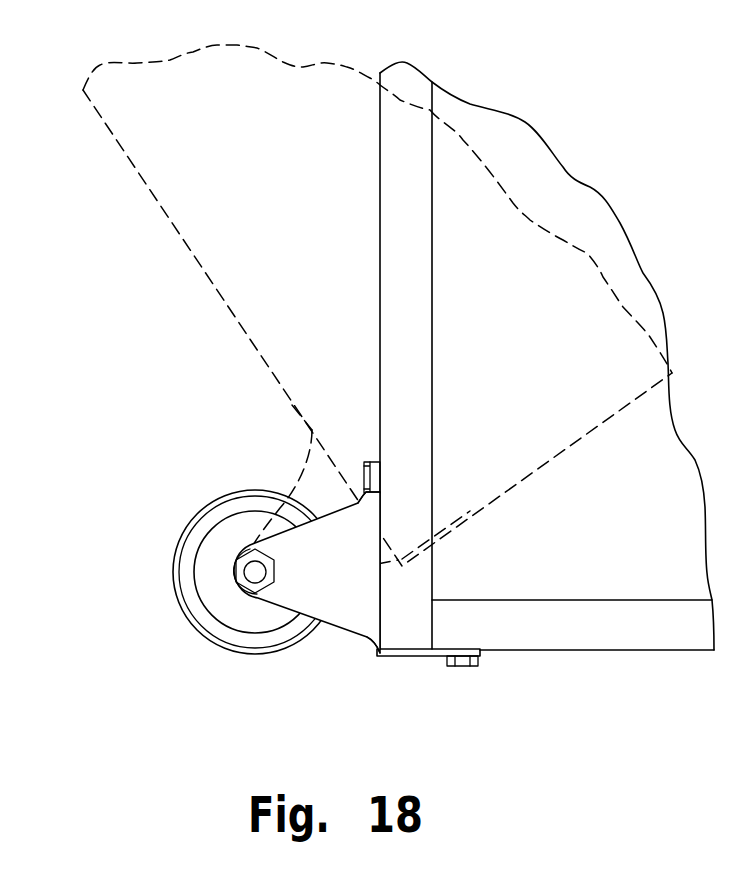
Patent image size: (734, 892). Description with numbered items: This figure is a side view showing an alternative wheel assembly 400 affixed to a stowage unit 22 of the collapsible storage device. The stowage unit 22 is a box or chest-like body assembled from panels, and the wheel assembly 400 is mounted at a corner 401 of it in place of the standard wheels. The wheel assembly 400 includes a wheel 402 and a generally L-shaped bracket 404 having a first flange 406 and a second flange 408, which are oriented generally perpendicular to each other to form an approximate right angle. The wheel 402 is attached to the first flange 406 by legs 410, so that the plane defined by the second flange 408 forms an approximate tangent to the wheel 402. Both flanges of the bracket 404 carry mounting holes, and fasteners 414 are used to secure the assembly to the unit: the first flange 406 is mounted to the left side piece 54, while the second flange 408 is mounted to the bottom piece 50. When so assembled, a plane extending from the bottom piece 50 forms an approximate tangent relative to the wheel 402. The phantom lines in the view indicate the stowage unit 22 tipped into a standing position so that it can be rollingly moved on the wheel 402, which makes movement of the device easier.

The stowage unit 22 is at (572, 178).
The bottom piece 50 is at (617, 635).
The left side piece 54 is at (400, 222).
The wheel assembly 400 is at (275, 463).
The corner 401 is at (400, 635).
The wheel 402 is at (174, 561).
The L-shaped bracket 404 is at (286, 607).
The first flange 406 is at (383, 510).
The second flange 408 is at (407, 657).
The legs 410 is at (328, 598).
The fasteners 414 is at (363, 480).